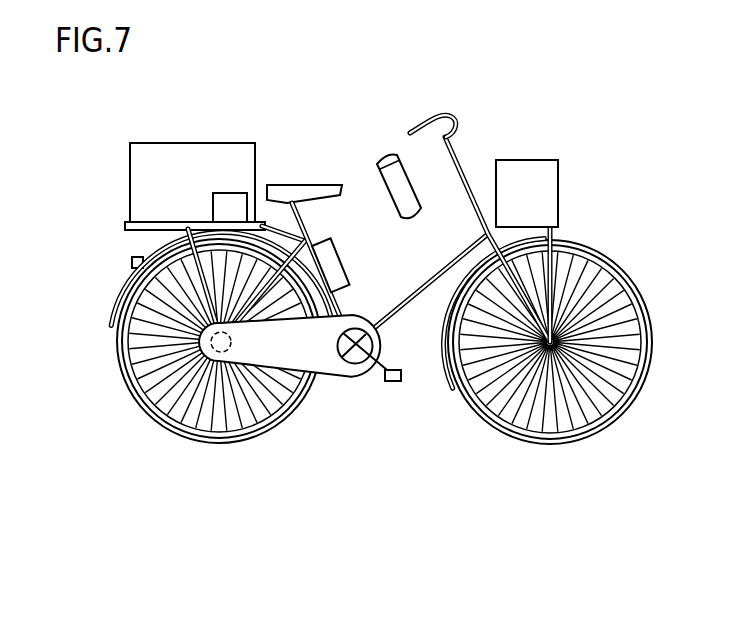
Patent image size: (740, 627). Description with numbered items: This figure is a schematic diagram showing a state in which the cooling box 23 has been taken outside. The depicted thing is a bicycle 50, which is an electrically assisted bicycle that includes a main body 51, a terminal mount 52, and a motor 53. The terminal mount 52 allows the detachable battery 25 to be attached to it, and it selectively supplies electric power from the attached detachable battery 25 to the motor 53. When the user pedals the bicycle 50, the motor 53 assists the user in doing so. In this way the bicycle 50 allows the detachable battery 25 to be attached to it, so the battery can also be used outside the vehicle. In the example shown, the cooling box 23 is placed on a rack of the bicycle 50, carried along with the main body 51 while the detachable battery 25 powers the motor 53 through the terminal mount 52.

The bicycle 50 is at (567, 61).
The cooling box 23 is at (201, 143).
The detachable battery 25 is at (349, 231).
The main body 51 is at (443, 116).
The terminal mount 52 is at (334, 265).
The motor 53 is at (221, 352).